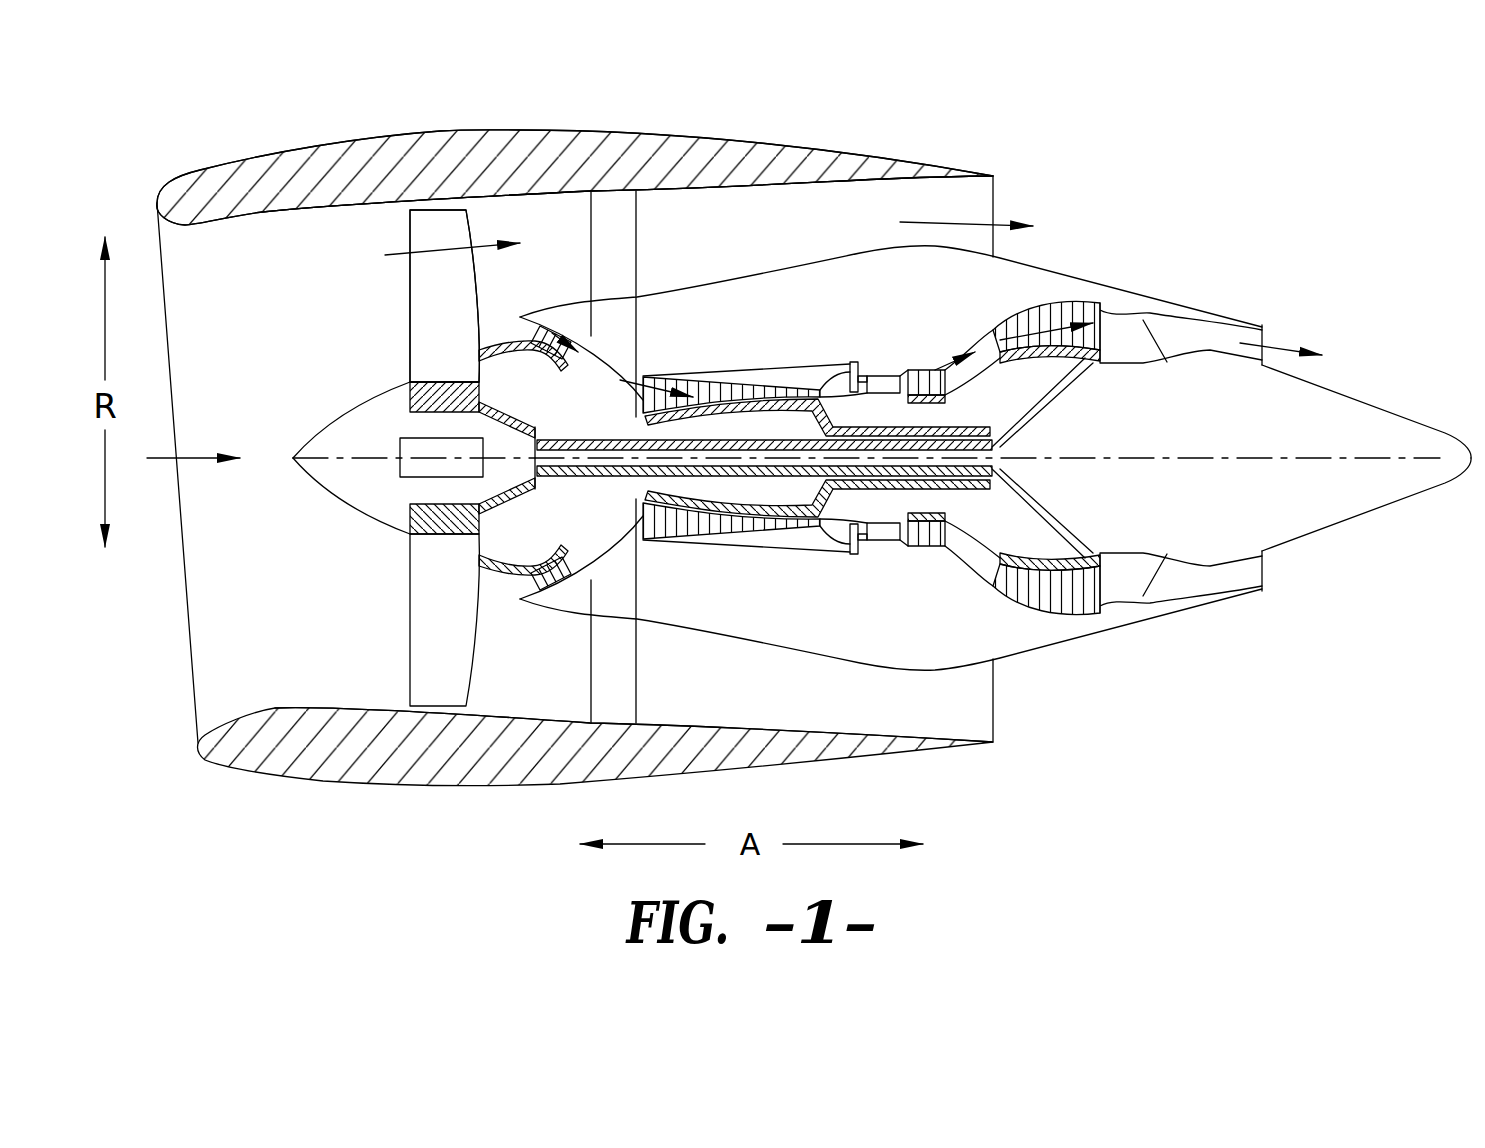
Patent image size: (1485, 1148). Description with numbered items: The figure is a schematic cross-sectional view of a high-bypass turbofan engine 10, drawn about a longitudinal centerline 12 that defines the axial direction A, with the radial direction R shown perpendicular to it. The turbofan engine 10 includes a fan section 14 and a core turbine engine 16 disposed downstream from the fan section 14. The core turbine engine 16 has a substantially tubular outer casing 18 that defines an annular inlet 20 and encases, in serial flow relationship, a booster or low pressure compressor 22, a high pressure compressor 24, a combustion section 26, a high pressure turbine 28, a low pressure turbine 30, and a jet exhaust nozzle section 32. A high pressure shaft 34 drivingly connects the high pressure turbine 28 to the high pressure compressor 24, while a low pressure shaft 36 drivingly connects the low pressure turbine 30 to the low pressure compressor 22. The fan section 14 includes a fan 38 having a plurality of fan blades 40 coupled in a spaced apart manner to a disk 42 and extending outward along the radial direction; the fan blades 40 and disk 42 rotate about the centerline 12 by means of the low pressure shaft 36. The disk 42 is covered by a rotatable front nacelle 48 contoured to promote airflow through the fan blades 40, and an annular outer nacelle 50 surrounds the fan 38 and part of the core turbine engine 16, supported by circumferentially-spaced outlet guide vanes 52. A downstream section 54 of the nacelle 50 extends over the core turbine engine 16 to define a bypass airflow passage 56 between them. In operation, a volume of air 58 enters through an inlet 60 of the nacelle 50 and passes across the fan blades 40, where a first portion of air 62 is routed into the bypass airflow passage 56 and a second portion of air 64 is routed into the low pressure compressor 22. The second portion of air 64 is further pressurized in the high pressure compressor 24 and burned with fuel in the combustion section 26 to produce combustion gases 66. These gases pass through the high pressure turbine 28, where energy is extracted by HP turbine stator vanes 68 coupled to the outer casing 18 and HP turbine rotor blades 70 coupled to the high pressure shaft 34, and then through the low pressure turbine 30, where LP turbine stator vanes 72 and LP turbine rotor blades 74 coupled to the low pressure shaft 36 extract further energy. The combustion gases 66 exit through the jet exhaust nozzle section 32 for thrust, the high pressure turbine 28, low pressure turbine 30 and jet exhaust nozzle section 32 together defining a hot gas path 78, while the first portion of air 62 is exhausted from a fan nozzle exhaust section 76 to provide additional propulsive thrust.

The turbofan engine 10 is at (1247, 205).
The longitudinal centerline 12 is at (1175, 457).
The fan section 14 is at (490, 115).
The core turbine engine 16 is at (812, 327).
The outer casing 18 is at (833, 657).
The annular inlet 20 is at (527, 583).
The low pressure compressor 22 is at (592, 557).
The high pressure compressor 24 is at (670, 535).
The combustion section 26 is at (872, 542).
The high pressure turbine 28 is at (943, 540).
The low pressure turbine 30 is at (1097, 623).
The jet exhaust nozzle section 32 is at (1267, 333).
The high pressure shaft 34 is at (917, 400).
The low pressure shaft 36 is at (587, 433).
The fan 38 is at (393, 297).
The fan blades 40 is at (403, 650).
The disk 42 is at (400, 397).
The rotatable front nacelle 48 is at (332, 425).
The outer nacelle 50 is at (479, 784).
The outlet guide vanes 52 is at (637, 215).
The downstream section of the nacelle 54 is at (800, 140).
The bypass airflow passage 56 is at (788, 239).
The volume of air 58 is at (190, 453).
The inlet 60 is at (191, 696).
The first portion of air 62 is at (423, 243).
The second portion of air 64 is at (498, 330).
The combustion gases 66 is at (1035, 307).
The HP turbine stator vanes 68 is at (913, 548).
The HP turbine rotor blades 70 is at (927, 548).
The LP turbine stator vanes 72 is at (1000, 583).
The LP turbine rotor blades 74 is at (1013, 593).
The fan nozzle exhaust section 76 is at (997, 200).
The hot gas path 78 is at (982, 338).